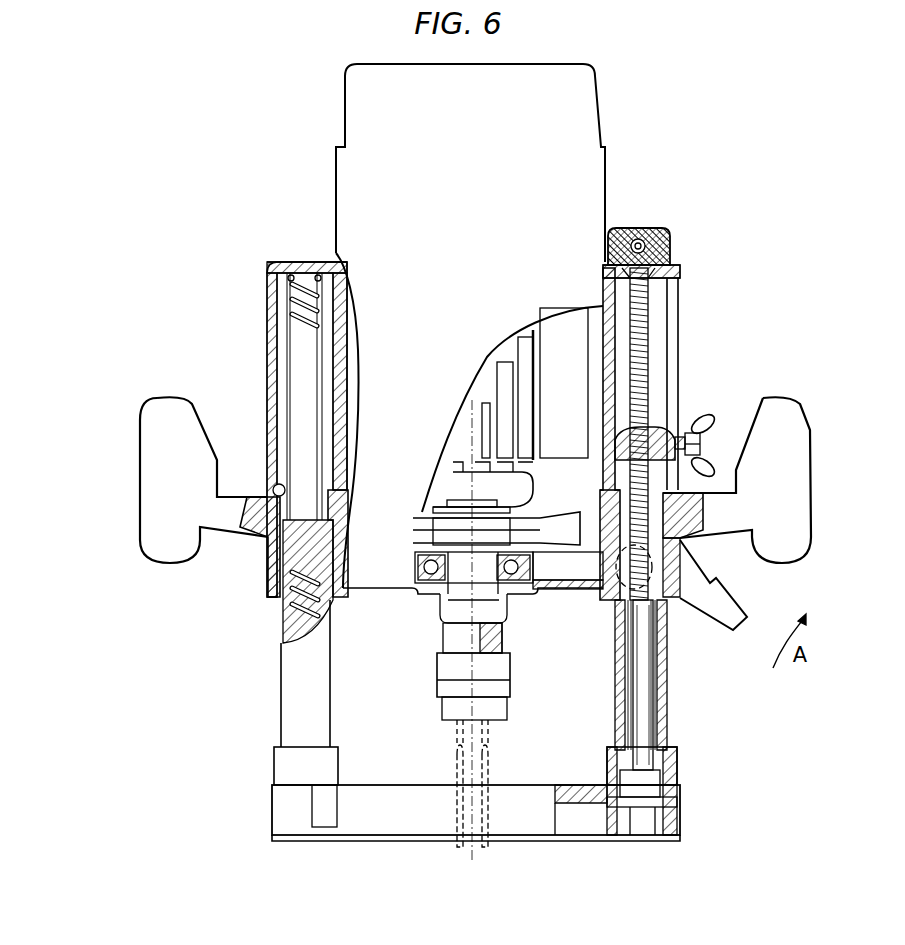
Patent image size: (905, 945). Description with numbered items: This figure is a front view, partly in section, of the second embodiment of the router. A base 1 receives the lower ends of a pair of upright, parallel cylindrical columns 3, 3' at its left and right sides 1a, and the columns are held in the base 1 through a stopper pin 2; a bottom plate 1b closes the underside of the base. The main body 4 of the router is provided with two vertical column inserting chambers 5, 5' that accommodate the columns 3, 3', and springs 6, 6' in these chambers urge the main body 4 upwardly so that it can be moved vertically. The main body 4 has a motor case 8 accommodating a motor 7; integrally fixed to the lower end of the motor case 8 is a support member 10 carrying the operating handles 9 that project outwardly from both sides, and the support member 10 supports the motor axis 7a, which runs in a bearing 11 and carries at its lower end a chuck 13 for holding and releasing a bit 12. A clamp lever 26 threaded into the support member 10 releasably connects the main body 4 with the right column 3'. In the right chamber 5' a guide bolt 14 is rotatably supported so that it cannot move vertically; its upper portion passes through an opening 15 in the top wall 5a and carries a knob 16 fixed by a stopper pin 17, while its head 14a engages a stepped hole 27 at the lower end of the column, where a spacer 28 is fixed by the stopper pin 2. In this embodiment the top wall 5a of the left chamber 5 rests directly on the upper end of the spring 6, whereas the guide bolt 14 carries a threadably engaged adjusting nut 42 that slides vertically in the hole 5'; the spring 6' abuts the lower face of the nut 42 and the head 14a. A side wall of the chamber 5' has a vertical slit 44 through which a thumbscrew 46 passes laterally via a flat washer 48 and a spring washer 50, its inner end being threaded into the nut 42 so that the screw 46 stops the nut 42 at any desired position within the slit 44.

The base 1 is at (270, 814).
The left and right sides of base 1a is at (283, 767).
The base bottom plate 1b is at (395, 842).
The stopper pin 2 is at (680, 801).
The cylindrical column 3 is at (284, 510).
The cylindrical column 3' is at (615, 675).
The main body 4 is at (340, 117).
The column inserting chamber 5 is at (258, 477).
The column inserting chamber 5' is at (630, 434).
The top wall 5a is at (318, 268).
The spring 6 is at (286, 429).
The spring 6' is at (620, 675).
The motor 7 is at (527, 386).
The motor axis 7a is at (452, 610).
The motor case 8 is at (340, 182).
The operating handle 9 is at (157, 416).
The support member 10 is at (277, 577).
The bearing 11 is at (533, 567).
The bit 12 is at (480, 850).
The chuck 13 is at (443, 697).
The guide bolt 14 is at (643, 680).
The head of guide bolt 14a is at (625, 772).
The opening 15 is at (630, 287).
The knob 16 is at (655, 229).
The stopper pin 17 is at (638, 238).
The clamp lever 26 is at (730, 607).
The hole 27 is at (660, 838).
The spacer 28 is at (640, 838).
The adjusting nut 42 is at (614, 442).
The vertical slit 44 is at (678, 333).
The thumbscrew 46 is at (706, 421).
The flat washer 48 is at (684, 432).
The spring washer 50 is at (700, 446).